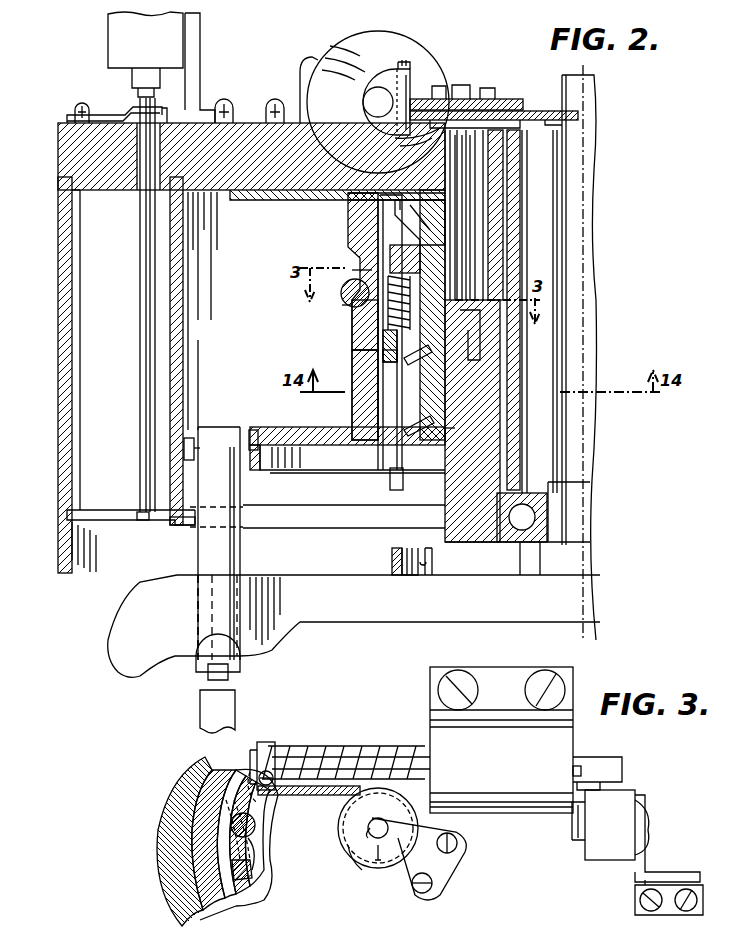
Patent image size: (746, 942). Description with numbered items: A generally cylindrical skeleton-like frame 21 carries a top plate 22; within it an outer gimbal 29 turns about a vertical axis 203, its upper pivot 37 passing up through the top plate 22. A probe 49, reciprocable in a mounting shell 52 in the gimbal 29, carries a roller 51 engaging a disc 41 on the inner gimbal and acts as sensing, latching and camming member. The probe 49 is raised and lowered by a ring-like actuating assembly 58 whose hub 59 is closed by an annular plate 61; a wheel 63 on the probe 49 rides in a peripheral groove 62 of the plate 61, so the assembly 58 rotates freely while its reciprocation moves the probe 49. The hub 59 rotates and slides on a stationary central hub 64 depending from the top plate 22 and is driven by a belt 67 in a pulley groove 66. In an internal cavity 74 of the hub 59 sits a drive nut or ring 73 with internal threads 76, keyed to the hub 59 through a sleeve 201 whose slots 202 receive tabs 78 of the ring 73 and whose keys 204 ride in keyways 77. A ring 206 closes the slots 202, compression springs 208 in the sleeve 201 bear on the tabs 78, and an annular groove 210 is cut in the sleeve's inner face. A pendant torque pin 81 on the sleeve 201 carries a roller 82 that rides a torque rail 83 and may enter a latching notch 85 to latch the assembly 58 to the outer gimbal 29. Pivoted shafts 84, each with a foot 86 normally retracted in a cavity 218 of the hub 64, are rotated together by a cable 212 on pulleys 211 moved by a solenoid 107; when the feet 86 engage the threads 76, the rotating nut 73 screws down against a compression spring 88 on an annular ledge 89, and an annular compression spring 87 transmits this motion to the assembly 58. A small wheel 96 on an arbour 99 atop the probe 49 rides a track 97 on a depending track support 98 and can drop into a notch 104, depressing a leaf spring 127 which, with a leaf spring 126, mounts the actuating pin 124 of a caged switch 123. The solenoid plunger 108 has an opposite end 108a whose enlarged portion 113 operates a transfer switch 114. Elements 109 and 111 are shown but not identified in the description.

In FIG. 2, the frame 21 is at (58, 305).
In FIG. 2, the top plate 22 is at (236, 130).
In FIG. 2, the outer gimbal 29 is at (354, 626).
In FIG. 2, the upper pivot 37 is at (577, 94).
In FIG. 2, the disc 41 is at (225, 706).
In FIG. 2, the probe 49 is at (226, 541).
In FIG. 2, the roller 51 is at (198, 680).
In FIG. 2, the mounting shell 52 is at (250, 572).
In FIG. 2, the actuating assembly 58 is at (292, 315).
In FIG. 2, the hub 59 is at (350, 234).
In FIG. 3, the hub 59 is at (172, 836).
In FIG. 2, the annular plate 61 is at (276, 436).
In FIG. 2, the peripheral groove 62 is at (250, 470).
In FIG. 2, the wheel 63 is at (252, 432).
In FIG. 2, the central portion 64 is at (480, 462).
In FIG. 3, the central portion 64 is at (240, 900).
In FIG. 2, the pulley groove 66 is at (342, 292).
In FIG. 2, the belt 67 is at (345, 306).
In FIG. 2, the drive nut 73 is at (440, 268).
In FIG. 3, the drive nut 73 is at (225, 908).
In FIG. 2, the internal cavity 74 is at (400, 376).
In FIG. 2, the internal threads 76 is at (416, 265).
In FIG. 3, the internal threads 76 is at (232, 885).
In FIG. 2, the keyways 77 is at (352, 344).
In FIG. 3, the keyways 77 is at (215, 870).
In FIG. 2, the tabs 78 is at (407, 348).
In FIG. 2, the torque pin 81 is at (390, 396).
In FIG. 2, the roller 82 is at (390, 486).
In FIG. 2, the torque rail 83 is at (392, 558).
In FIG. 2, the thread-engaging member 84 is at (460, 223).
In FIG. 3, the thread-engaging member 84 is at (255, 826).
In FIG. 2, the latching notch 85 is at (434, 560).
In FIG. 2, the foot 86 is at (500, 342).
In FIG. 3, the foot 86 is at (255, 848).
In FIG. 2, the annular compression spring 87 is at (421, 356).
In FIG. 2, the compression spring 88 is at (419, 416).
In FIG. 2, the annular ledge 89 is at (455, 436).
In FIG. 2, the wheel 96 is at (184, 440).
In FIG. 2, the track 97 is at (292, 510).
In FIG. 2, the track support 98 is at (175, 238).
In FIG. 2, the arbour 99 is at (210, 453).
In FIG. 2, the notch 104 is at (185, 525).
In FIG. 2, the solenoid 107 is at (336, 48).
In FIG. 3, the solenoid 107 is at (501, 740).
In FIG. 2, the plunger 108 is at (372, 100).
In FIG. 3, the plunger end 108a is at (620, 760).
In FIG. 3, the spring 109 is at (390, 734).
In FIG. 2, the shaft 111 is at (372, 126).
In FIG. 3, the shaft 111 is at (262, 742).
In FIG. 3, the enlarged portion 113 is at (580, 756).
In FIG. 3, the transfer switch 114 is at (637, 852).
In FIG. 2, the caged switch 123 is at (108, 36).
In FIG. 2, the actuating pin 124 is at (140, 276).
In FIG. 2, the leaf spring 126 is at (112, 115).
In FIG. 2, the leaf spring 127 is at (108, 510).
In FIG. 2, the sleeve 201 is at (350, 248).
In FIG. 3, the sleeve 201 is at (196, 790).
In FIG. 2, the slots 202 is at (352, 330).
In FIG. 2, the axis 203 is at (588, 134).
In FIG. 2, the keys 204 is at (350, 207).
In FIG. 3, the keys 204 is at (200, 850).
In FIG. 2, the ring 206 is at (352, 358).
In FIG. 2, the compression springs 208 is at (358, 270).
In FIG. 2, the annular groove 210 is at (350, 221).
In FIG. 2, the pulley 211 is at (502, 99).
In FIG. 3, the pulley 211 is at (254, 770).
In FIG. 2, the cable 212 is at (534, 112).
In FIG. 3, the cable 212 is at (320, 796).
In FIG. 3, the cavity 218 is at (252, 880).